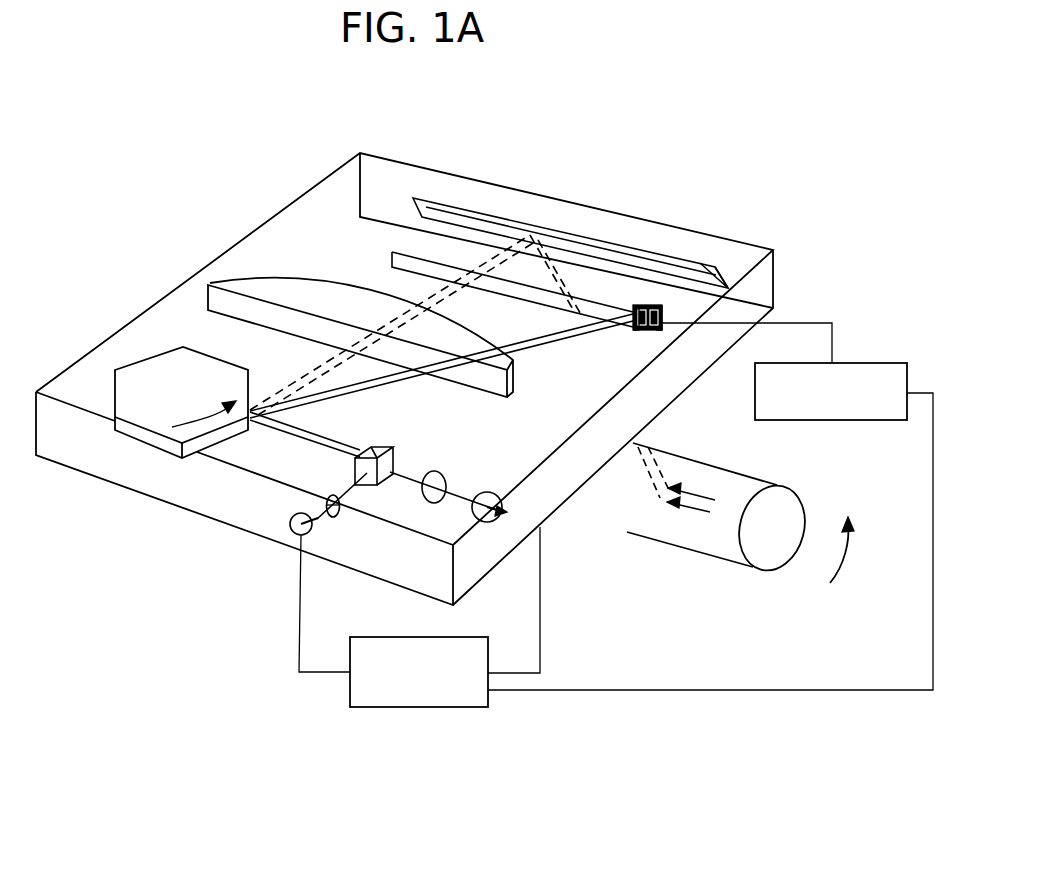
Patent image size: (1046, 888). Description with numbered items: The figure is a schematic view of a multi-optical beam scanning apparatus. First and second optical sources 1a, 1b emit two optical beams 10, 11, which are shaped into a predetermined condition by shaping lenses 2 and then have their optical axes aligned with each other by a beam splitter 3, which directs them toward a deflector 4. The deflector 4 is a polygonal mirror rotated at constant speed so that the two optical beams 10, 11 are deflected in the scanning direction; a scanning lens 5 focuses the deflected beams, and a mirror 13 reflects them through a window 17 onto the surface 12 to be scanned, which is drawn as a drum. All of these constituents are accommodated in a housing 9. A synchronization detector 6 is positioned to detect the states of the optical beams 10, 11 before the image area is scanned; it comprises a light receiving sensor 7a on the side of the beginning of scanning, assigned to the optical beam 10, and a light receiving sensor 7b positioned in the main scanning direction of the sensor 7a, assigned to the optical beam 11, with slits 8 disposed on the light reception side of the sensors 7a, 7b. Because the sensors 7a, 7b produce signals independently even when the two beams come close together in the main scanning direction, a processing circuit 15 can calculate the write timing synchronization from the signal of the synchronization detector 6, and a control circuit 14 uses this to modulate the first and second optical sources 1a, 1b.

The first optical source 1a is at (290, 528).
The second optical source 1b is at (490, 525).
The shaping lenses 2 is at (425, 495).
The beam splitter 3 is at (363, 471).
The deflector 4 is at (145, 378).
The scanning lens 5 is at (262, 293).
The synchronization detector 6 is at (652, 330).
The light receiving sensor 7a is at (663, 318).
The light receiving sensor 7b is at (640, 330).
The slits 8 is at (673, 260).
The housing 9 is at (645, 235).
The optical beam 10 is at (583, 323).
The optical beam 11 is at (553, 340).
The surface to be scanned 12 is at (723, 556).
The mirror 13 is at (432, 213).
The control circuit 14 is at (418, 709).
The processing circuit 15 is at (889, 423).
The window 17 is at (392, 256).